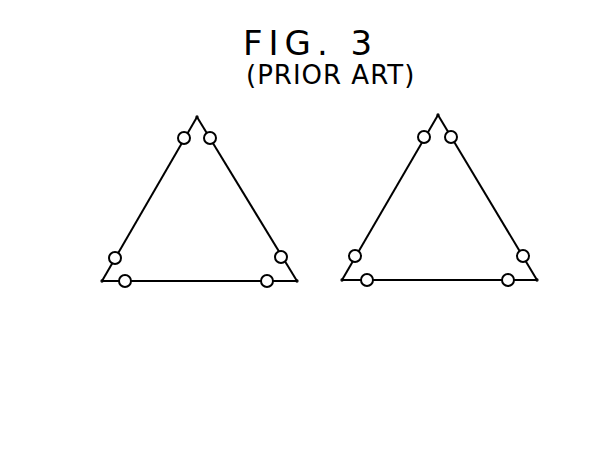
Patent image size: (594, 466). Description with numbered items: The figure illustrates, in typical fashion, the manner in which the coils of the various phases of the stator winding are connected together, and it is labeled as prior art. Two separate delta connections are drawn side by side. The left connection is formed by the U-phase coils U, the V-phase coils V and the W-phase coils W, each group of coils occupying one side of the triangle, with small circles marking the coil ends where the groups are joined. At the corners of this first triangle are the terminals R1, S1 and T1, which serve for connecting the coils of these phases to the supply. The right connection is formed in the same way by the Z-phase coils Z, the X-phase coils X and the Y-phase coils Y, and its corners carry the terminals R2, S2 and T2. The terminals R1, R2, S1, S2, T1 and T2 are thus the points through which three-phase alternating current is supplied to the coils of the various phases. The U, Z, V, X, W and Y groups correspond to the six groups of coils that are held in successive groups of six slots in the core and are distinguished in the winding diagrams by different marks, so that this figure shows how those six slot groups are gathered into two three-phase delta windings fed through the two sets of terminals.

The terminal R1 is at (196, 105).
The terminal S1 is at (294, 291).
The terminal T1 is at (93, 291).
The U-phase coils U is at (242, 191).
The V-phase coils V is at (193, 282).
The W-phase coils W is at (150, 193).
The terminal R2 is at (436, 104).
The terminal S2 is at (547, 291).
The terminal T2 is at (343, 291).
The X-phase coils X is at (483, 190).
The Y-phase coils Y is at (446, 281).
The Z-phase coils Z is at (394, 190).